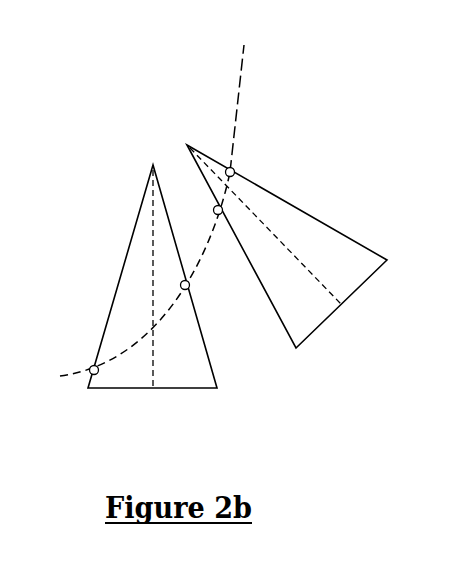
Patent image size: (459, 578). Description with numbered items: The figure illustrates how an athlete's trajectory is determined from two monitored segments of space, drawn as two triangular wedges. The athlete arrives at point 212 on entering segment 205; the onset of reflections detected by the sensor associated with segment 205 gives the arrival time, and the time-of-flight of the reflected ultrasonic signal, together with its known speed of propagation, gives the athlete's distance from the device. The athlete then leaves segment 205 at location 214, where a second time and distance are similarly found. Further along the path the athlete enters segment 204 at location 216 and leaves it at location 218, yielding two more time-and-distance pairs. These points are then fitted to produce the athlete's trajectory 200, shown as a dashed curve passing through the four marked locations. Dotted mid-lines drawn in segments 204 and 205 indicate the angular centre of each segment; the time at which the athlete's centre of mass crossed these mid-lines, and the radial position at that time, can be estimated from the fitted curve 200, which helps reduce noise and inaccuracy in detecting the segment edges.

The trajectory 200 is at (247, 88).
The segment 204 is at (196, 380).
The segment 205 is at (362, 271).
The point 212 is at (238, 166).
The location 214 is at (213, 206).
The location 216 is at (192, 290).
The location 218 is at (90, 363).